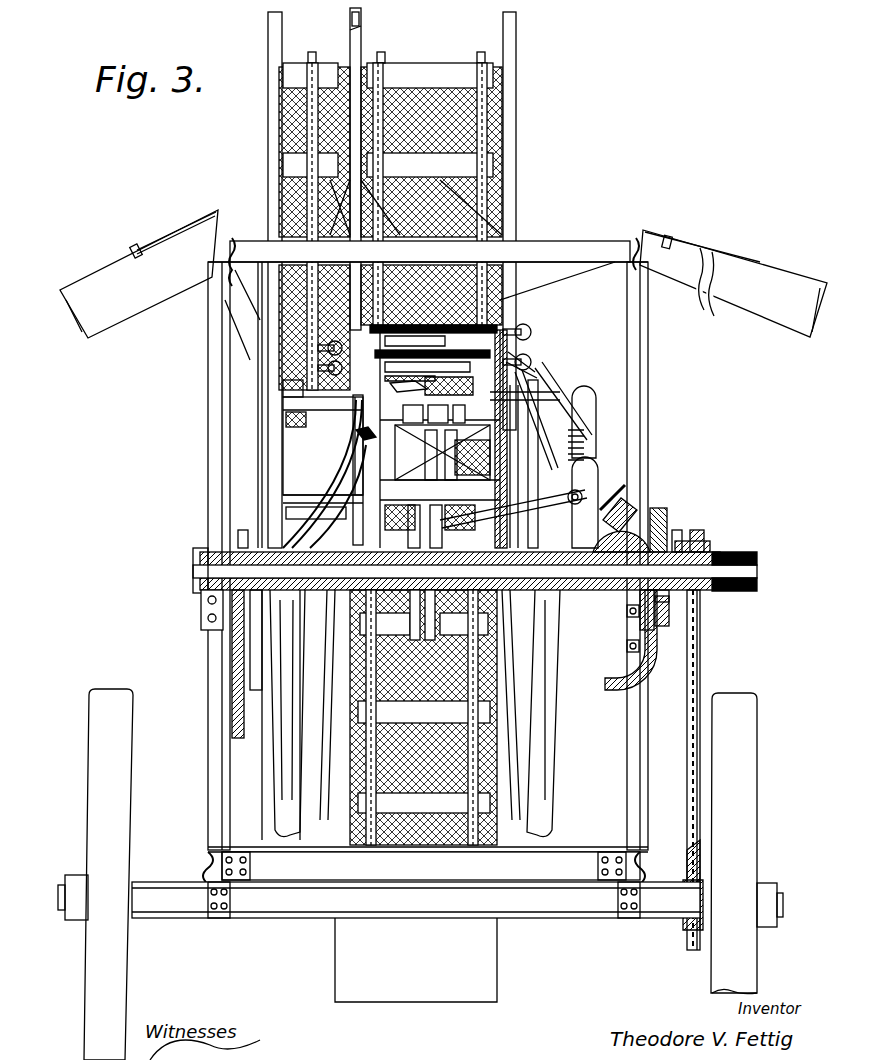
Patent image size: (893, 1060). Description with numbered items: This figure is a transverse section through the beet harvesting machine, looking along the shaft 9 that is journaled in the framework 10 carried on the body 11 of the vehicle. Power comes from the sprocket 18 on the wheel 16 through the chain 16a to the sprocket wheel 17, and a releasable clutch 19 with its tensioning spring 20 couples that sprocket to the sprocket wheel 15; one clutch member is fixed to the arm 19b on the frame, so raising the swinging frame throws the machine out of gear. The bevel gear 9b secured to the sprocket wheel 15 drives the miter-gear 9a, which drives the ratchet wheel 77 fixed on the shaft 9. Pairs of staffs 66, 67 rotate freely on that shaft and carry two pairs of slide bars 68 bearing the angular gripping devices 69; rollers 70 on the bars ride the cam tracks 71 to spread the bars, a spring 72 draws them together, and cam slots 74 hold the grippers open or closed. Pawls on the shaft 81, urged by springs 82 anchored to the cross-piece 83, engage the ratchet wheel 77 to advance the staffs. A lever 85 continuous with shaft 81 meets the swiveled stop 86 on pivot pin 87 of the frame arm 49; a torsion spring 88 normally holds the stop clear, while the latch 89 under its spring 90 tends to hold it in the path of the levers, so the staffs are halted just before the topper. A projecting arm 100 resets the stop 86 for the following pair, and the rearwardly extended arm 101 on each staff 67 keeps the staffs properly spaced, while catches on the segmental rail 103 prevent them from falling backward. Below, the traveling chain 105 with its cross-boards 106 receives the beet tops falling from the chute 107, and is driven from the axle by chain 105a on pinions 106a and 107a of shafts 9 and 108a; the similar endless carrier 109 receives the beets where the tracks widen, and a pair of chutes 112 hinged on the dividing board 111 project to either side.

The shaft 9 is at (758, 572).
The miter-gear 9a is at (652, 520).
The bevel gear 9b is at (668, 528).
The framework 10 is at (648, 412).
The body 11 is at (638, 850).
The sprocket wheel 15 is at (684, 534).
The wheel 16 is at (745, 876).
The chain 16a is at (702, 672).
The sprocket wheel 17 is at (706, 545).
The sprocket 18 is at (700, 858).
The releasable clutch 19 is at (708, 590).
The arm 19b is at (668, 690).
The tensioning spring 20 is at (735, 556).
The frame arm 49 is at (335, 510).
The staff 66 is at (365, 540).
The staff 67 is at (480, 536).
The slide bars 68 is at (282, 394).
The gripping devices 69 is at (458, 324).
The rollers 70 is at (328, 350).
The cam tracks 71 is at (328, 618).
The spring 72 is at (402, 324).
The cam slots 74 is at (412, 380).
The ratchet wheel 77 is at (423, 717).
The shaft 81 is at (471, 453).
The springs 82 is at (435, 442).
The cross-piece 83 is at (508, 478).
The lever 85 is at (530, 372).
The swiveled stop 86 is at (566, 420).
The pivot pin 87 is at (582, 505).
The torsion spring 88 is at (586, 446).
The latch 89 is at (582, 396).
The spring 90 is at (526, 466).
The projecting arm 100 is at (522, 515).
The rearwardly extended arm 101 is at (548, 425).
The segmental rail 103 is at (356, 436).
The traveling chain 105 is at (278, 128).
The chain 105a is at (240, 656).
The blades or cross-boards 106 is at (292, 80).
The pinion 106a is at (240, 543).
The chute 107 is at (275, 460).
The pinion 107a is at (250, 740).
The shaft 108a is at (232, 688).
The endless carrier 109 is at (505, 158).
The dividing board 111 is at (362, 56).
The chutes 112 is at (533, 210).